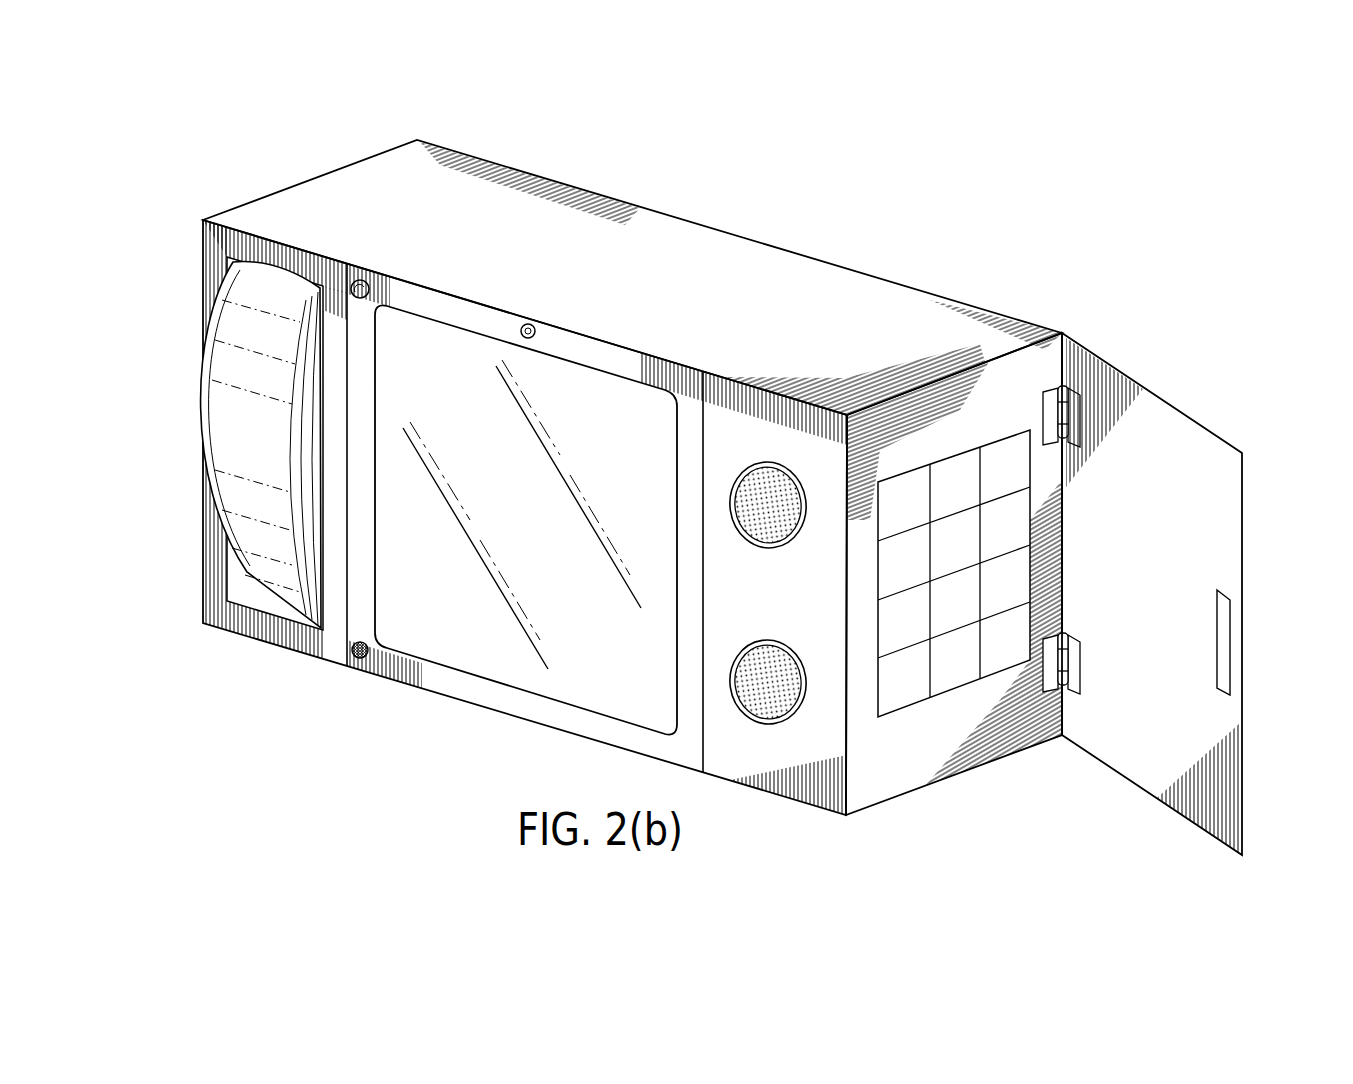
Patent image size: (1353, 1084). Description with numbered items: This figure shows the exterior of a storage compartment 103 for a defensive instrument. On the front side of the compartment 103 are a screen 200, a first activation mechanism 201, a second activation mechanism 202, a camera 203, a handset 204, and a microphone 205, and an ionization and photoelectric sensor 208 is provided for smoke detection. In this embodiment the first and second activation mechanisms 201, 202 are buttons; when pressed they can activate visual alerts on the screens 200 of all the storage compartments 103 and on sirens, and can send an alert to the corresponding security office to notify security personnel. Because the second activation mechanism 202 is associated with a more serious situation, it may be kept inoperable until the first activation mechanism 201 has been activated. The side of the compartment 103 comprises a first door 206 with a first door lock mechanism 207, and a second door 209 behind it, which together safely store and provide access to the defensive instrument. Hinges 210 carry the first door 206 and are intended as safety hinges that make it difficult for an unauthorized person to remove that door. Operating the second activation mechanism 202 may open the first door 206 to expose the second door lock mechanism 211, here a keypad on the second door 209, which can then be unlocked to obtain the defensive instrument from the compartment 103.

The storage compartment 103 is at (246, 168).
The screen 200 is at (488, 660).
The first activation mechanism 201 is at (768, 690).
The second activation mechanism 202 is at (766, 495).
The camera 203 is at (528, 328).
The handset 204 is at (232, 412).
The microphone 205 is at (360, 655).
The first door 206 is at (1202, 466).
The first door lock mechanism 207 is at (1226, 662).
The ionization and photoelectric sensor 208 is at (360, 287).
The second door 209 is at (887, 775).
The hinges 210 is at (1067, 413).
The second door lock mechanism 211 is at (958, 688).